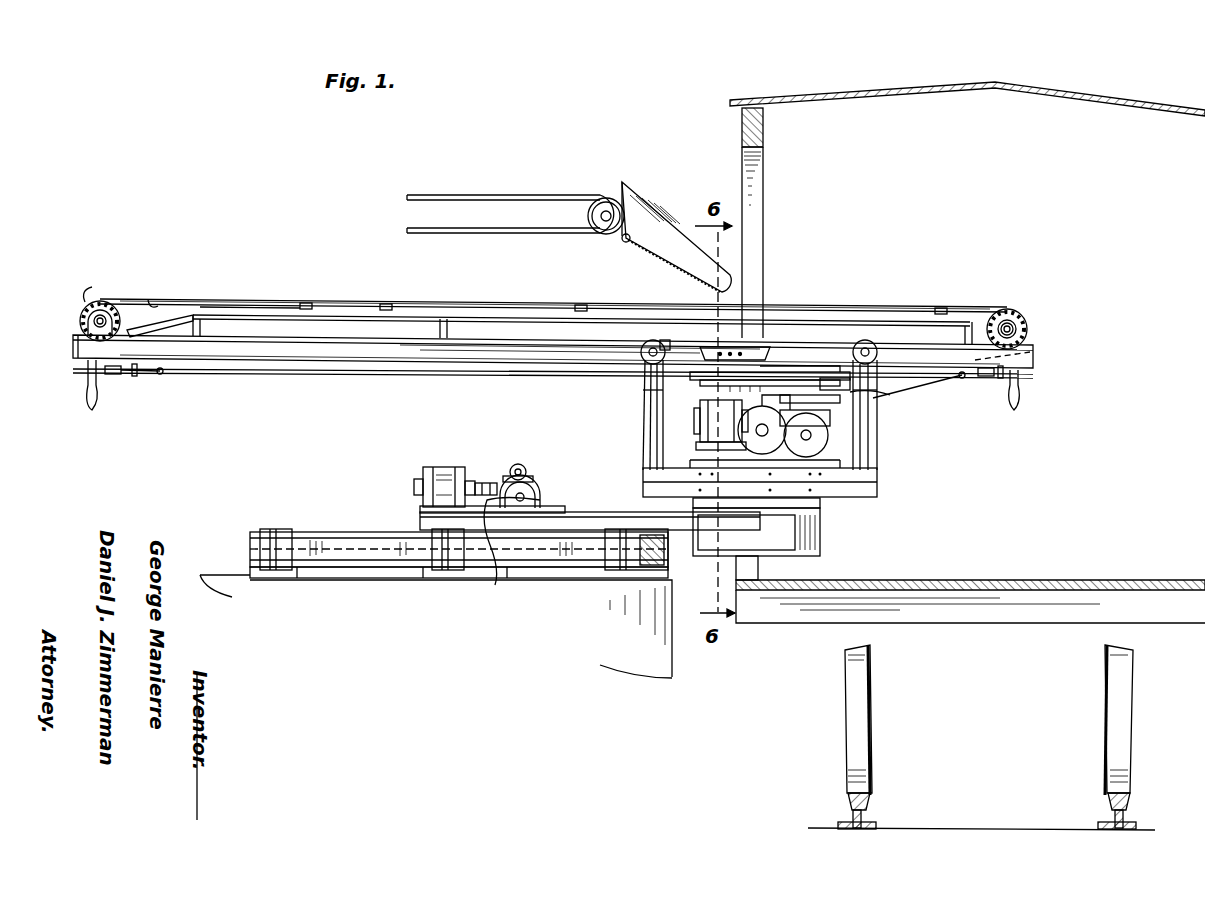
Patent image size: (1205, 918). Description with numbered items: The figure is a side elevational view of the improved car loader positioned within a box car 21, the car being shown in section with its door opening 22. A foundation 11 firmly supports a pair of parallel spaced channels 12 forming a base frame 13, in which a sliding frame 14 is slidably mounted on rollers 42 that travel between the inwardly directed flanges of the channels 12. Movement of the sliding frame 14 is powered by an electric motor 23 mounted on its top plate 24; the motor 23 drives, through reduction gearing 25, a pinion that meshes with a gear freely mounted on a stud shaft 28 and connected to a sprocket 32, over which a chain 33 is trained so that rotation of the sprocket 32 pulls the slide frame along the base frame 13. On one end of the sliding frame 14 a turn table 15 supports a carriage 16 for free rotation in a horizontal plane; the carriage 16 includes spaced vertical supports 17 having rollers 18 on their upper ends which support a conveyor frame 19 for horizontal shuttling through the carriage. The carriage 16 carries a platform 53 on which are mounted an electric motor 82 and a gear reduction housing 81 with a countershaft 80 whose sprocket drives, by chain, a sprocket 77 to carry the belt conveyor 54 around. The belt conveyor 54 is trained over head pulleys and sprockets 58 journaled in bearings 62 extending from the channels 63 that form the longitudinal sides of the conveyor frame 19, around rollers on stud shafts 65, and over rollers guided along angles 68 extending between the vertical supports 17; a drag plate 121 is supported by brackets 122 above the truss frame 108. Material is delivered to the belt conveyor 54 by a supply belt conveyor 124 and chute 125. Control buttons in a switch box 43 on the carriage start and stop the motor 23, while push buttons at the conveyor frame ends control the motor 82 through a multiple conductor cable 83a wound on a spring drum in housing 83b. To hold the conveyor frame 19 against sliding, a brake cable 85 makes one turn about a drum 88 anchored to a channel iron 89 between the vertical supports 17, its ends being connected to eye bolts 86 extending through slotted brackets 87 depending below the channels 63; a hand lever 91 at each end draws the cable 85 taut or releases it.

The foundation 11 is at (672, 667).
The channels 12 is at (252, 548).
The base frame 13 is at (338, 530).
The sliding frame 14 is at (618, 498).
The turn table 15 is at (824, 532).
The carriage 16 is at (878, 490).
The vertical supports 17 is at (648, 440).
The rollers 18 is at (640, 358).
The conveyor frame 19 is at (490, 366).
The box car 21 is at (1050, 88).
The car door opening 22 is at (757, 205).
The electric motor 23 is at (450, 465).
The top plate 24 is at (540, 508).
The reduction gearing 25 is at (527, 466).
The stud shaft 28 is at (524, 494).
The sprocket 32 is at (492, 486).
The chain 33 is at (512, 553).
The rollers 42 is at (425, 547).
The switch box 43 is at (745, 350).
The platform 53 is at (700, 455).
The belt conveyor 54 is at (90, 300).
The sprockets 58 is at (85, 318).
The bearings 62 is at (1020, 329).
The channels 63 is at (278, 360).
The stud shafts 65 is at (1033, 352).
The angles 68 is at (665, 345).
The sprocket 77 is at (770, 455).
The countershaft 80 is at (818, 502).
The gear reduction housing 81 is at (835, 455).
The electric motor 82 is at (700, 414).
The multiple conductor cable 83a is at (880, 398).
The housing 83b is at (845, 380).
The cable 85 is at (348, 378).
The eye bolt 86 is at (960, 380).
The bracket 87 is at (136, 376).
The drum 88 is at (765, 372).
The channel iron 89 is at (830, 378).
The hand lever 91 is at (90, 398).
The truss frame 108 is at (230, 301).
The drag plate 121 is at (150, 298).
The brackets 122 is at (385, 303).
The belt conveyor 124 is at (545, 195).
The chute 125 is at (660, 232).